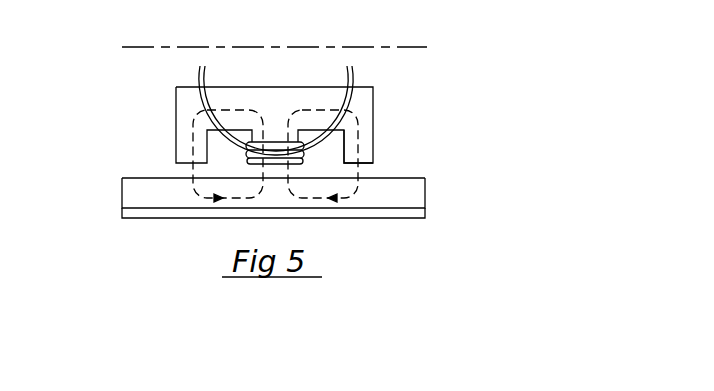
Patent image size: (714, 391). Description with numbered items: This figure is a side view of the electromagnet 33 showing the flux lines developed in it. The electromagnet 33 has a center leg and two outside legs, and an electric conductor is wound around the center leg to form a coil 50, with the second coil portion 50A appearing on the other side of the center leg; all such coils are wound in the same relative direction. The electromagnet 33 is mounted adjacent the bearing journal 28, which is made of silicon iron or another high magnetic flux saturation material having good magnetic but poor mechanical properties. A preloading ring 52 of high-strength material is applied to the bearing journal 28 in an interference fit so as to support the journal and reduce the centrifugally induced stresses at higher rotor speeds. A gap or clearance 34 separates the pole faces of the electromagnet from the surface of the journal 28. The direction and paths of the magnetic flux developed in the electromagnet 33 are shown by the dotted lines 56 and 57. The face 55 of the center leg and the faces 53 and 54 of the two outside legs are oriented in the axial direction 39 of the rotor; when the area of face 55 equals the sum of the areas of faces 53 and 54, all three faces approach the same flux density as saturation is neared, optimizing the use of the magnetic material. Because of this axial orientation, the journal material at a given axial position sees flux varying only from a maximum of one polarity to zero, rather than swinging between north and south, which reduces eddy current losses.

The bearing journal 28 is at (390, 202).
The electromagnet 33 is at (373, 140).
The gap or clearance 34 is at (345, 168).
The axial direction 39 is at (398, 47).
The coil 50 is at (217, 104).
The cylindrical body arc 50A is at (340, 105).
The preloading ring 52 is at (158, 218).
The face 53 is at (176, 165).
The face 54 is at (373, 163).
The face 55 is at (257, 165).
The dotted line 56 is at (197, 118).
The dotted line 57 is at (355, 118).